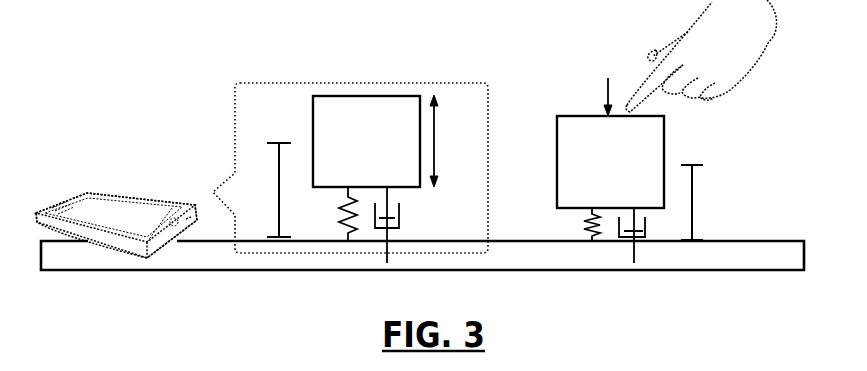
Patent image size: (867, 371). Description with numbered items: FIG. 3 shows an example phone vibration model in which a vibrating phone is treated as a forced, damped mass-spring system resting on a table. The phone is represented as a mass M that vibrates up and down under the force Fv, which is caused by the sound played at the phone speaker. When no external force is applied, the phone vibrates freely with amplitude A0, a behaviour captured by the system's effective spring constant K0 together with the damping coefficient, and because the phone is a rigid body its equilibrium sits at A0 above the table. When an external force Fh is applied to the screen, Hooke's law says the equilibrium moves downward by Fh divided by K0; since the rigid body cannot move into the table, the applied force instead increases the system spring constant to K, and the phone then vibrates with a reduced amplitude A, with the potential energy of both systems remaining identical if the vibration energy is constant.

The mass M is at (610, 162).
The spring constant K is at (577, 224).
The effective spring constant K0 is at (333, 213).
The amplitude A is at (700, 202).
The free vibration amplitude A0 is at (269, 190).
The vibration force Fv is at (448, 141).
The external force Fh is at (608, 85).